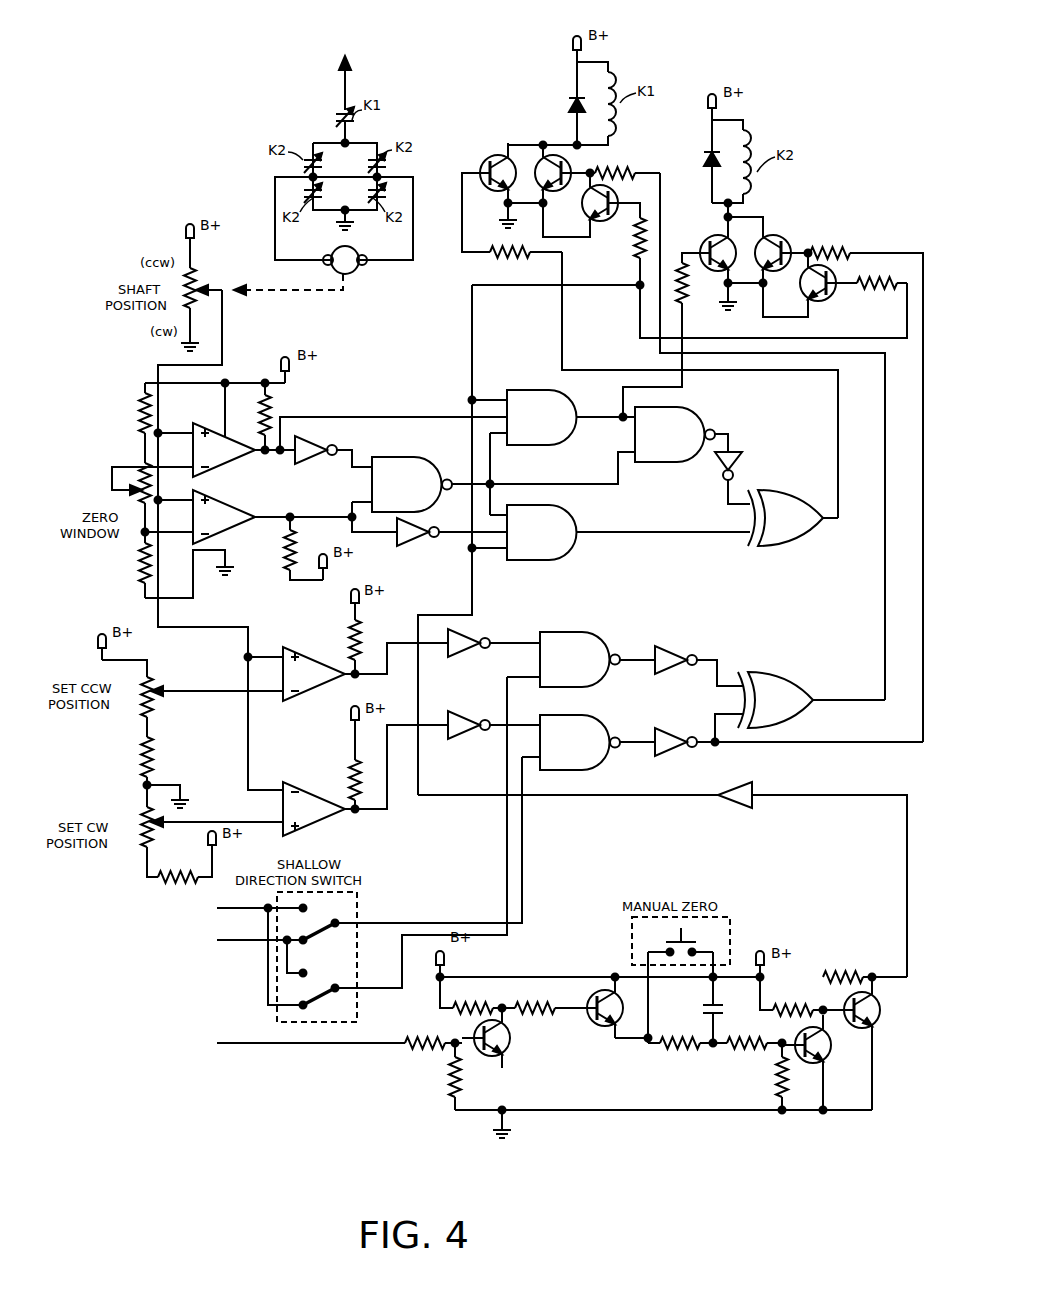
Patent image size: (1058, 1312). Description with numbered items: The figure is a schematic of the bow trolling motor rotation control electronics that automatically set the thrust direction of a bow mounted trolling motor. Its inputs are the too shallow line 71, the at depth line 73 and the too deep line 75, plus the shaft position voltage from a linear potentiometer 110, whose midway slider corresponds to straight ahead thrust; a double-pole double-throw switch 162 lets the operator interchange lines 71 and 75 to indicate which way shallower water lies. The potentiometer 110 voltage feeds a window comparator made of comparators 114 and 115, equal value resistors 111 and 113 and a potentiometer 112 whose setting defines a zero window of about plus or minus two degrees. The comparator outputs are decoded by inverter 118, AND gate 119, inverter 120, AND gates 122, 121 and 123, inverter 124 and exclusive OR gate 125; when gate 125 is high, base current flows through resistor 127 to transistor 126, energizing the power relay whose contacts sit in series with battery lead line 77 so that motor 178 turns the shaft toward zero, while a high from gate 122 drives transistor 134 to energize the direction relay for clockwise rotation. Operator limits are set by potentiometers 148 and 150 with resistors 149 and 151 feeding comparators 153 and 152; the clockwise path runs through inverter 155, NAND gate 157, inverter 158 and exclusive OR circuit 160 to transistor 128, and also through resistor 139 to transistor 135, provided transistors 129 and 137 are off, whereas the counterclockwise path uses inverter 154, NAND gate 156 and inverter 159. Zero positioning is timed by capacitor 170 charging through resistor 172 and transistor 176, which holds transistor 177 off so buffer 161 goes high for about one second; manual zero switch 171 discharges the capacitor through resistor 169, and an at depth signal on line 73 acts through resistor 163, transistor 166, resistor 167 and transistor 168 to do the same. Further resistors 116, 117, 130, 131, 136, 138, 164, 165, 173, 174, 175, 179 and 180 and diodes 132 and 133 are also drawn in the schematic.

The too shallow signal line 71 is at (217, 909).
The at depth signal line 73 is at (236, 1043).
The too deep signal line 75 is at (226, 942).
The battery lead line 77 is at (340, 94).
The potentiometer 110 is at (197, 276).
The resistor 111 is at (140, 407).
The potentiometer 112 is at (108, 486).
The resistor 113 is at (140, 568).
The comparator 114 is at (214, 438).
The comparator 115 is at (233, 510).
The pull-up resistor 116 is at (272, 414).
The pull-up resistor 117 is at (282, 564).
The inverter 118 is at (312, 462).
The AND gate 119 is at (419, 496).
The inverter 120 is at (416, 546).
The AND gate 121 is at (558, 545).
The AND gate 122 is at (558, 430).
The AND gate 123 is at (686, 447).
The inverter 124 is at (740, 467).
The exclusive OR gate 125 is at (804, 530).
The transistor 126 is at (488, 162).
The resistor 127 is at (496, 258).
The transistor 128 is at (544, 154).
The transistor 129 is at (592, 222).
The resistor 130 is at (640, 254).
The resistor 131 is at (625, 167).
The diode and relay coil K1 132 is at (572, 102).
The diode and relay coil K2 133 is at (706, 158).
The transistor 134 is at (704, 238).
The transistor 135 is at (784, 238).
The resistor 136 is at (684, 297).
The transistor 137 is at (824, 299).
The resistor 138 is at (884, 290).
The resistor 139 is at (831, 244).
The potentiometer 148 is at (154, 683).
The resistor 149 is at (153, 762).
The potentiometer 150 is at (140, 844).
The resistor 151 is at (158, 882).
The comparator 152 is at (302, 787).
The comparator 153 is at (302, 654).
The inverter 154 is at (480, 634).
The inverter 155 is at (464, 712).
The NAND gate 156 is at (591, 672).
The NAND gate 157 is at (591, 755).
The inverter 158 is at (668, 730).
The inverter 159 is at (682, 650).
The exclusive OR circuit 160 is at (796, 712).
The buffer 161 is at (730, 810).
The double-pole double-throw switch 162 is at (360, 914).
The resistor 163 is at (418, 1050).
The resistor 164 is at (452, 1080).
The resistor 165 is at (460, 1012).
The transistor 166 is at (514, 1048).
The resistor 167 is at (539, 1002).
The transistor 168 is at (598, 1025).
The resistor 169 is at (688, 1052).
The capacitor 170 is at (702, 1010).
The manual zero switch 171 is at (630, 942).
The resistor 172 is at (750, 1052).
The resistor 173 is at (778, 1080).
The resistor 174 is at (788, 1006).
The resistor 175 is at (848, 969).
The transistor 176 is at (830, 1049).
The transistor 177 is at (880, 1006).
The motor 178 is at (352, 275).
The pull-up resistor 179 is at (360, 632).
The pull-up resistor 180 is at (348, 765).